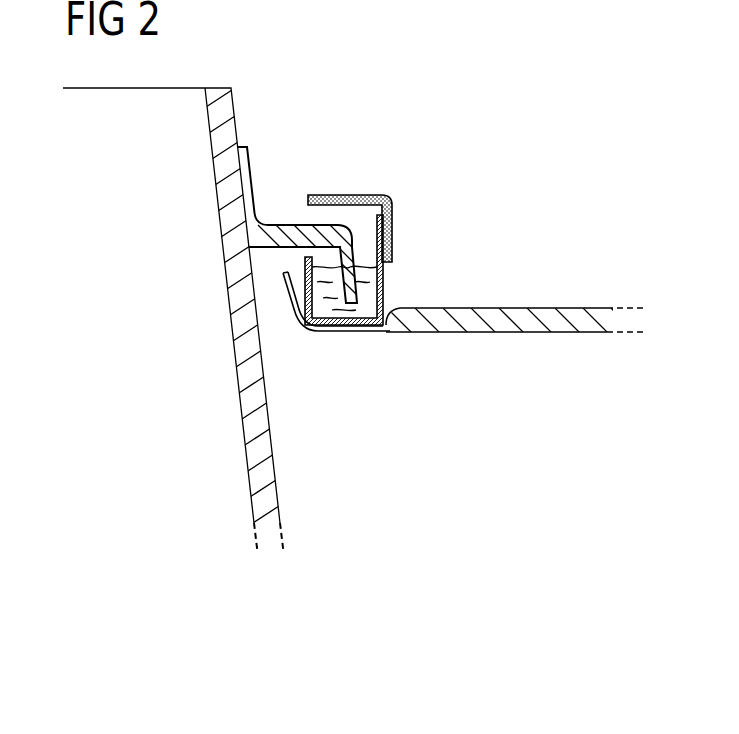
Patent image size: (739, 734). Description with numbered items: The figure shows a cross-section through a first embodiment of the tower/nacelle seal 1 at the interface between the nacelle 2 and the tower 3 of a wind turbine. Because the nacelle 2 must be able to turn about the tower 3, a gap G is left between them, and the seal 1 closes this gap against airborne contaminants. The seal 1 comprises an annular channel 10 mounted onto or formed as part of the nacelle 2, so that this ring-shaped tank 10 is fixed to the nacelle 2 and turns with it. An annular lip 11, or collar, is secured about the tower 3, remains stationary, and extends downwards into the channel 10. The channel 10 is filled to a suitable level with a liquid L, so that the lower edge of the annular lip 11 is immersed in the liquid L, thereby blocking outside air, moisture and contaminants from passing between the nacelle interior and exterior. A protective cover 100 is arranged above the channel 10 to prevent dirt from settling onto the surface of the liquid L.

The tower/nacelle seal 1 is at (438, 219).
The nacelle 2 is at (512, 322).
The tower 3 is at (263, 465).
The annular channel 10 is at (388, 287).
The annular lip 11 is at (295, 232).
The protective cover 100 is at (355, 197).
The gap G is at (281, 339).
The liquid L is at (372, 309).